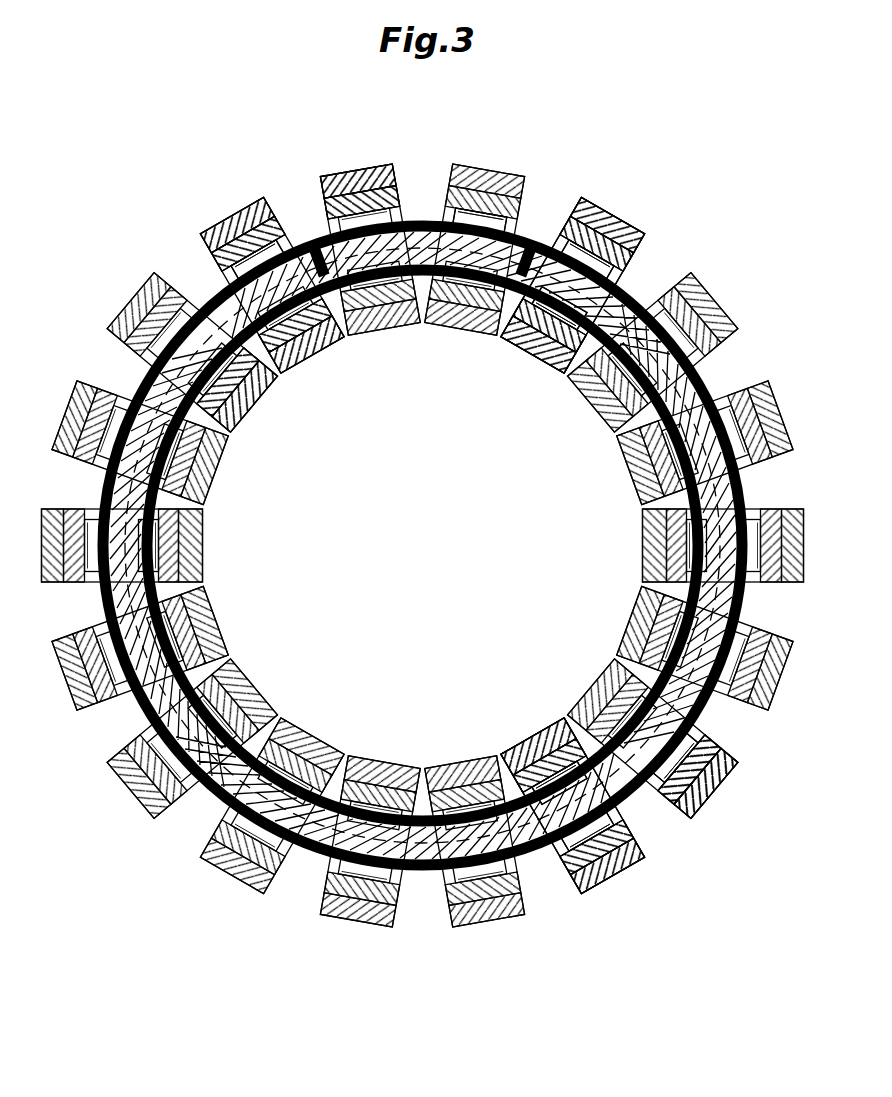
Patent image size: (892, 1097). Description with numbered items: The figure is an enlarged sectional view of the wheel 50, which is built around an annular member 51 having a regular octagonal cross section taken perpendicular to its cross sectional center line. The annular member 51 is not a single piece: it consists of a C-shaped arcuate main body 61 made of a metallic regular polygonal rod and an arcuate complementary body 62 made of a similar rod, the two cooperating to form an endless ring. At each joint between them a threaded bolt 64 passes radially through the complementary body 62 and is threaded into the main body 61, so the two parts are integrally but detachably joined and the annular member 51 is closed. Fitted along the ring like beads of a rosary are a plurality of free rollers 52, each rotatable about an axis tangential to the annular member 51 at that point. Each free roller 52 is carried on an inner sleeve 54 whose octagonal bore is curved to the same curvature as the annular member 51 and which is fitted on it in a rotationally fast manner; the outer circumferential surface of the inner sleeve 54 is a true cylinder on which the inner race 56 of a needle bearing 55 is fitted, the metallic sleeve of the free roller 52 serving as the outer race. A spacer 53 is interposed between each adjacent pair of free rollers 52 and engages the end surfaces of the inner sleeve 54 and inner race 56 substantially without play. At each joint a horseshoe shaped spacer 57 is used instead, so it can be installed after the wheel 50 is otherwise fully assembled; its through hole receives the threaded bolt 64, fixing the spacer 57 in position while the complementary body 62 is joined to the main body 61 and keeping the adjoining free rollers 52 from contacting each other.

The wheel 50 is at (619, 889).
The annular member 51 is at (541, 858).
The free roller 52 is at (337, 177).
The spacer 53 is at (213, 297).
The inner sleeve 54 is at (263, 360).
The needle bearing 55 is at (282, 367).
The inner race 56 is at (323, 347).
The horseshoe shaped spacer 57 is at (295, 243).
The main body 61 is at (615, 300).
The complementary body 62 is at (430, 238).
The threaded bolt 64 is at (315, 241).